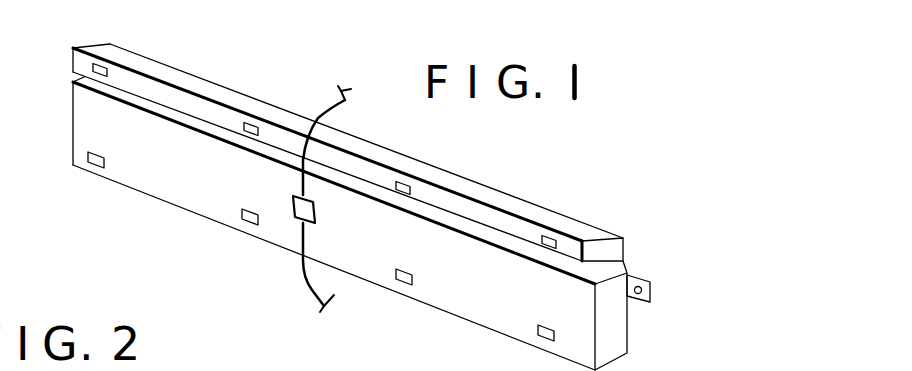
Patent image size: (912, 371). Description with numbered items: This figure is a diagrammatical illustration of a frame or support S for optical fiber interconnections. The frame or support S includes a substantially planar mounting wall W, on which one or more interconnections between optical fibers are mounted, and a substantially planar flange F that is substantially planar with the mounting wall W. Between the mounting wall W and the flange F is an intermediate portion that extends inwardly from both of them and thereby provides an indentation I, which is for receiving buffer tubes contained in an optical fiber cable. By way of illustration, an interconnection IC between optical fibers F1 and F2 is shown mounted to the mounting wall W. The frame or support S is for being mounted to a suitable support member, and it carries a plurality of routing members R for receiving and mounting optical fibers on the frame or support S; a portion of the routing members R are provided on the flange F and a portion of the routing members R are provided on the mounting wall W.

The routing members R is at (100, 64).
The flange F is at (132, 82).
The optical fiber F1 is at (321, 121).
The optical fiber F2 is at (303, 278).
The frame or support S is at (118, 183).
The mounting wall W is at (221, 167).
The interconnection IC is at (315, 212).
The indentation I is at (606, 268).